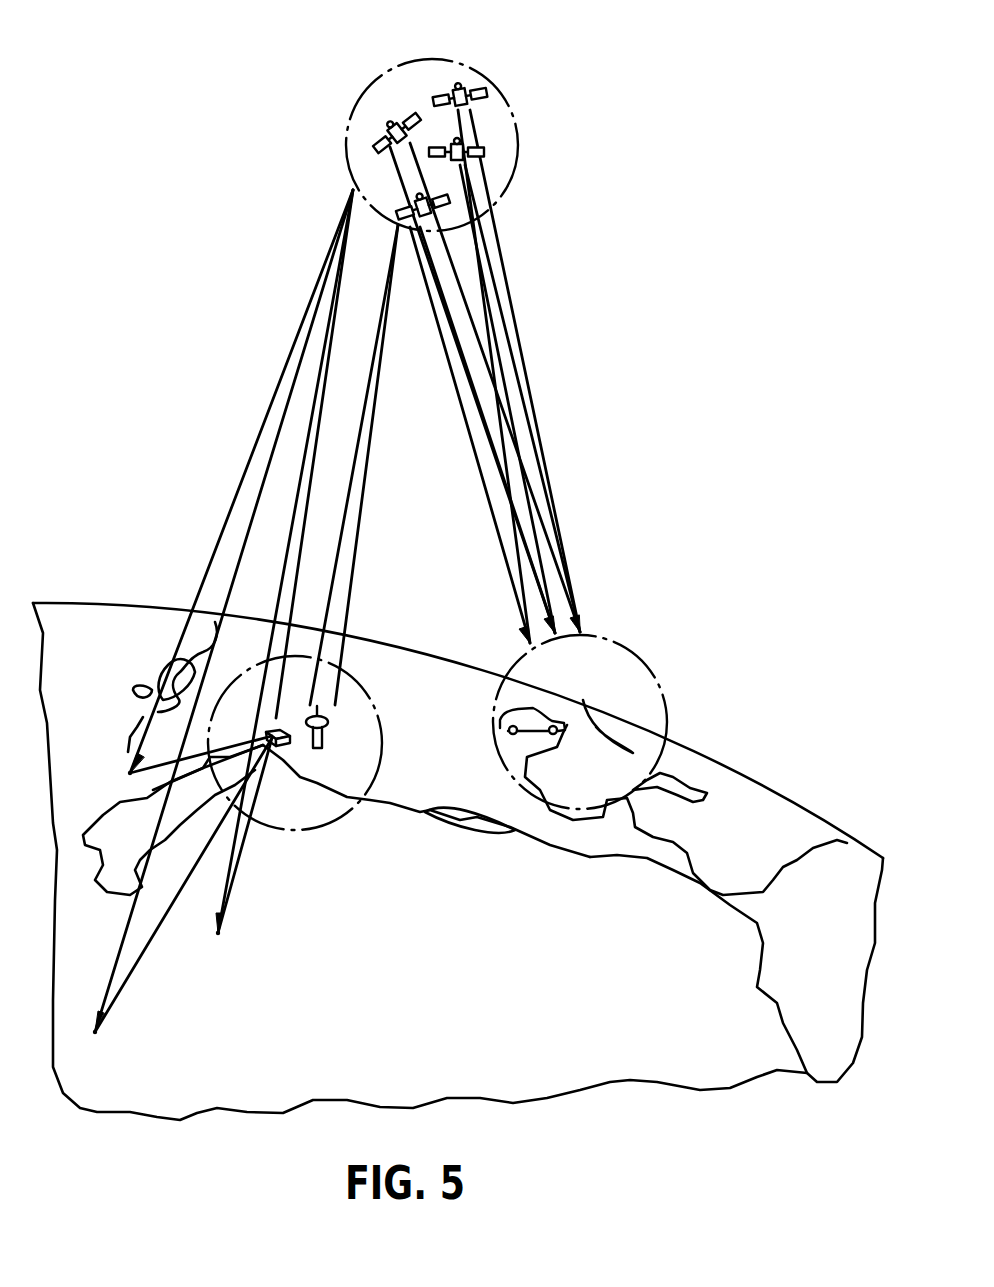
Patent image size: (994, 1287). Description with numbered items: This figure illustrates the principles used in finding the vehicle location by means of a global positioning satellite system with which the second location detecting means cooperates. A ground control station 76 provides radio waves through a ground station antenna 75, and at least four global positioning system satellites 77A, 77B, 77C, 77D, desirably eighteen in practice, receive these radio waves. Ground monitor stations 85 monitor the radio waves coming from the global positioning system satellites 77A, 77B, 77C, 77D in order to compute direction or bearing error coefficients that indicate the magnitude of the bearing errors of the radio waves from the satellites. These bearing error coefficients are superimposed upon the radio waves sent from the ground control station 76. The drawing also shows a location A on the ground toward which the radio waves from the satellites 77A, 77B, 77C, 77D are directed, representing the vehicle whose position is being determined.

The global positioning system satellite 77A is at (395, 120).
The global positioning system satellite 77B is at (460, 86).
The global positioning system satellite 77C is at (458, 143).
The global positioning system satellite 77D is at (425, 225).
The ground station antenna 75 is at (325, 737).
The ground control station 76 is at (287, 748).
The ground monitor station 85 is at (130, 772).
The vehicle A is at (525, 712).